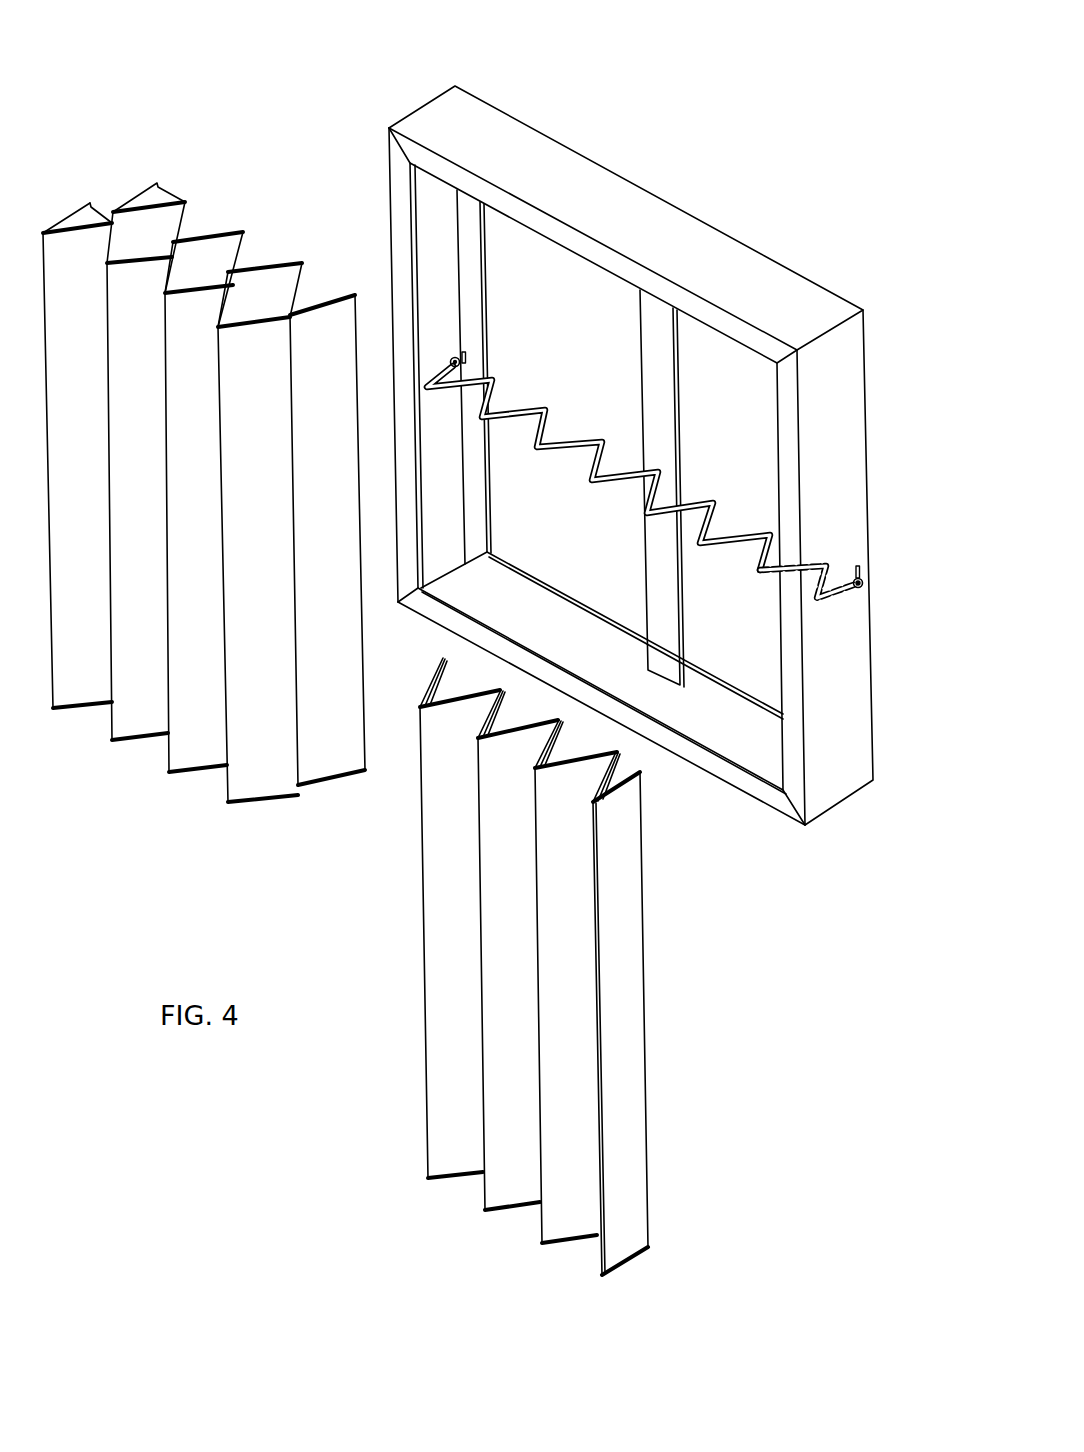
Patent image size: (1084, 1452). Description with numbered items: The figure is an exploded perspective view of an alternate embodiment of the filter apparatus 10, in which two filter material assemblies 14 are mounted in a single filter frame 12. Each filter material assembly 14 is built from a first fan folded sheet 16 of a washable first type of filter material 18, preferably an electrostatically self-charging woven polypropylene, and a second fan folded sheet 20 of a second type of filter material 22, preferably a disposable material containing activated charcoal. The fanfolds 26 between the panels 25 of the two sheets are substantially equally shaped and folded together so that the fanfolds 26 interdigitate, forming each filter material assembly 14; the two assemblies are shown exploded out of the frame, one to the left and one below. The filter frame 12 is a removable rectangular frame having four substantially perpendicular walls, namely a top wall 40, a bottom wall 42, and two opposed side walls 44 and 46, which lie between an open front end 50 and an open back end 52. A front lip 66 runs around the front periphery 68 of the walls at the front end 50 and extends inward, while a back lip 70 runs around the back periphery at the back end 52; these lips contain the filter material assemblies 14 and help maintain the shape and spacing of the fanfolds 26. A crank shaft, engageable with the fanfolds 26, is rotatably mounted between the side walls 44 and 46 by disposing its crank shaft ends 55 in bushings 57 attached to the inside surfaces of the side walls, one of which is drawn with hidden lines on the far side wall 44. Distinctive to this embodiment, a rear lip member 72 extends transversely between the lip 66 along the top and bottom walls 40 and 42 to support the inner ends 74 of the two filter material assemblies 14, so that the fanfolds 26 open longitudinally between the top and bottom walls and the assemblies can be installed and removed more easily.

The filter apparatus 10 is at (680, 117).
The filter frame 12 is at (430, 100).
The filter material assembly 14 is at (218, 210).
The first fan folded sheet 16 is at (262, 787).
The first type of filter material 18 is at (245, 767).
The second fan folded sheet 20 is at (335, 680).
The second type of filter material 22 is at (323, 753).
The panels 25 is at (63, 216).
The fanfolds 26 is at (156, 196).
The top wall 40 is at (745, 262).
The bottom wall 42 is at (705, 722).
The side wall 44 is at (840, 750).
The side wall 46 is at (438, 250).
The open front end 50 is at (405, 250).
The open back end 52 is at (538, 567).
The crank shaft ends 55 is at (462, 345).
The bushings 57 is at (453, 358).
The front lip 66 is at (727, 774).
The front periphery 68 is at (510, 192).
The back lip 70 is at (732, 697).
The rear lip member 72 is at (668, 565).
The inner ends 74 is at (642, 802).